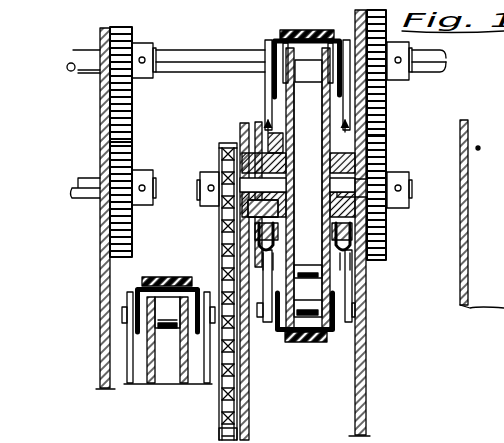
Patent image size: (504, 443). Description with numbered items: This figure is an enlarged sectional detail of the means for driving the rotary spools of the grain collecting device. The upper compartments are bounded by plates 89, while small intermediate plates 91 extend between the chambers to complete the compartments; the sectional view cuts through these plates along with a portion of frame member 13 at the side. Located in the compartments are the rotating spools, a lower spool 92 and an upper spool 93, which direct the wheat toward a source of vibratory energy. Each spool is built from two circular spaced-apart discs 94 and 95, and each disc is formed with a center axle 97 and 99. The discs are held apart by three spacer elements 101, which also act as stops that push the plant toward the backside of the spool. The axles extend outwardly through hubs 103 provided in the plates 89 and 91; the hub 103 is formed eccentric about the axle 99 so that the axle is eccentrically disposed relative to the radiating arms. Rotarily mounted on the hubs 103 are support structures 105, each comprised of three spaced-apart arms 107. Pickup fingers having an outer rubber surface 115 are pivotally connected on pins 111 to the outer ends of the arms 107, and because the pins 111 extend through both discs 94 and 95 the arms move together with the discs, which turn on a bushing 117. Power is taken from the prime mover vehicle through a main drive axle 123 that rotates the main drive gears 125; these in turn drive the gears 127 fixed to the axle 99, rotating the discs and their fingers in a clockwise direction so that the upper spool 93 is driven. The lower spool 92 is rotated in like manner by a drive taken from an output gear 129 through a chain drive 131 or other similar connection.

The frame member 13 is at (462, 127).
The plate 89 is at (366, 392).
The small intermediate plate 91 is at (100, 32).
The rotating spool 92 is at (160, 396).
The rotating spool 93 is at (311, 358).
The disc 94 is at (270, 108).
The disc 95 is at (202, 392).
The center axle 97 is at (200, 183).
The center axle 99 is at (86, 178).
The spacer element 101 is at (302, 268).
The hub 103 is at (323, 206).
The support structure 105 is at (261, 95).
The arm 107 is at (275, 45).
The pin 111 is at (305, 62).
The outer rubber surface 115 is at (283, 32).
The bushing 117 is at (313, 106).
The main drive axle 123 is at (190, 53).
The main drive gear 125 is at (124, 87).
The gear 127 is at (126, 163).
The output gear 129 is at (212, 206).
The chain drive 131 is at (220, 429).